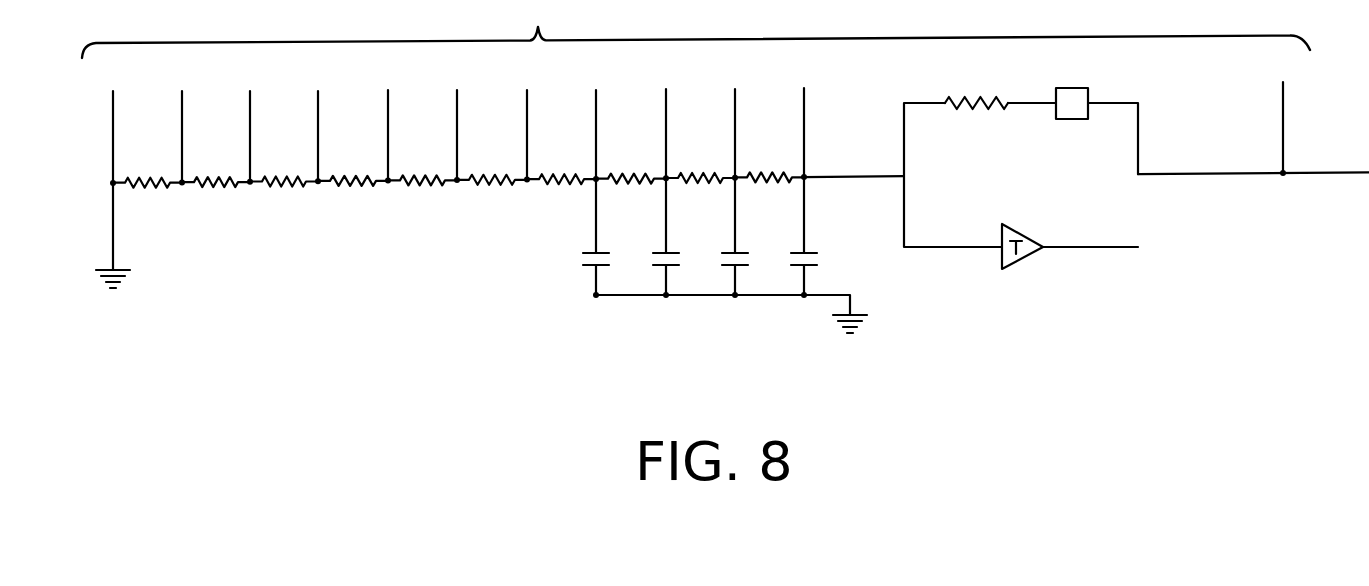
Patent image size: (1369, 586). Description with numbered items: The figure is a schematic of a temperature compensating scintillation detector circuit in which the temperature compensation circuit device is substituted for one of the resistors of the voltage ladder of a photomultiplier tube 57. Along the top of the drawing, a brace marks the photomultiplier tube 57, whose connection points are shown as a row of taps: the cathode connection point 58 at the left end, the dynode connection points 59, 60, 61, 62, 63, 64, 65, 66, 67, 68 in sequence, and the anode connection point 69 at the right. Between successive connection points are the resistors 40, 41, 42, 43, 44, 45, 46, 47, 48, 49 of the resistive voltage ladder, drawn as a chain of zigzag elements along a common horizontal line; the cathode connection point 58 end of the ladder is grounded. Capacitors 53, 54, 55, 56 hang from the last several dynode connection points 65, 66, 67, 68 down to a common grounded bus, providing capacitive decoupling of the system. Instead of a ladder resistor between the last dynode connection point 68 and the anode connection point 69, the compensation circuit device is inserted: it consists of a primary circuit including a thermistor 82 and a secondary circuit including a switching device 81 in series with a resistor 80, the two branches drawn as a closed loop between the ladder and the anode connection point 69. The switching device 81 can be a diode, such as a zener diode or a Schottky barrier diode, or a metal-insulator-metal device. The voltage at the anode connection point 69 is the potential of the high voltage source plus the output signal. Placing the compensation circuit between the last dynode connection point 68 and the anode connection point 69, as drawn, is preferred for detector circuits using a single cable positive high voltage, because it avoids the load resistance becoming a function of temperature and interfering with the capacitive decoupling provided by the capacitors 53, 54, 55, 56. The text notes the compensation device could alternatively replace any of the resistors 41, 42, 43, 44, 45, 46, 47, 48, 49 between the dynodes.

The resistor 40 is at (147, 201).
The resistor 41 is at (216, 201).
The resistor 42 is at (284, 201).
The resistor 43 is at (353, 200).
The resistor 44 is at (422, 200).
The resistor 45 is at (492, 200).
The resistor 46 is at (561, 199).
The resistor 47 is at (631, 199).
The resistor 48 is at (700, 199).
The resistor 49 is at (769, 198).
The capacitor 53 is at (574, 237).
The capacitor 54 is at (648, 236).
The capacitor 55 is at (719, 236).
The capacitor 56 is at (787, 236).
The photomultiplier tube 57 is at (696, 29).
The cathode connection point 58 is at (99, 89).
The dynode connection point 59 is at (168, 89).
The dynode connection point 60 is at (236, 89).
The dynode connection point 61 is at (304, 89).
The dynode connection point 62 is at (374, 88).
The dynode connection point 63 is at (443, 87).
The dynode connection point 64 is at (513, 87).
The dynode connection point 65 is at (582, 87).
The dynode connection point 66 is at (652, 86).
The dynode connection point 67 is at (721, 86).
The dynode connection point 68 is at (790, 85).
The anode connection point 69 is at (1269, 79).
The resistor 80 is at (976, 123).
The switching device 81 is at (1073, 123).
The thermistor 82 is at (1022, 266).